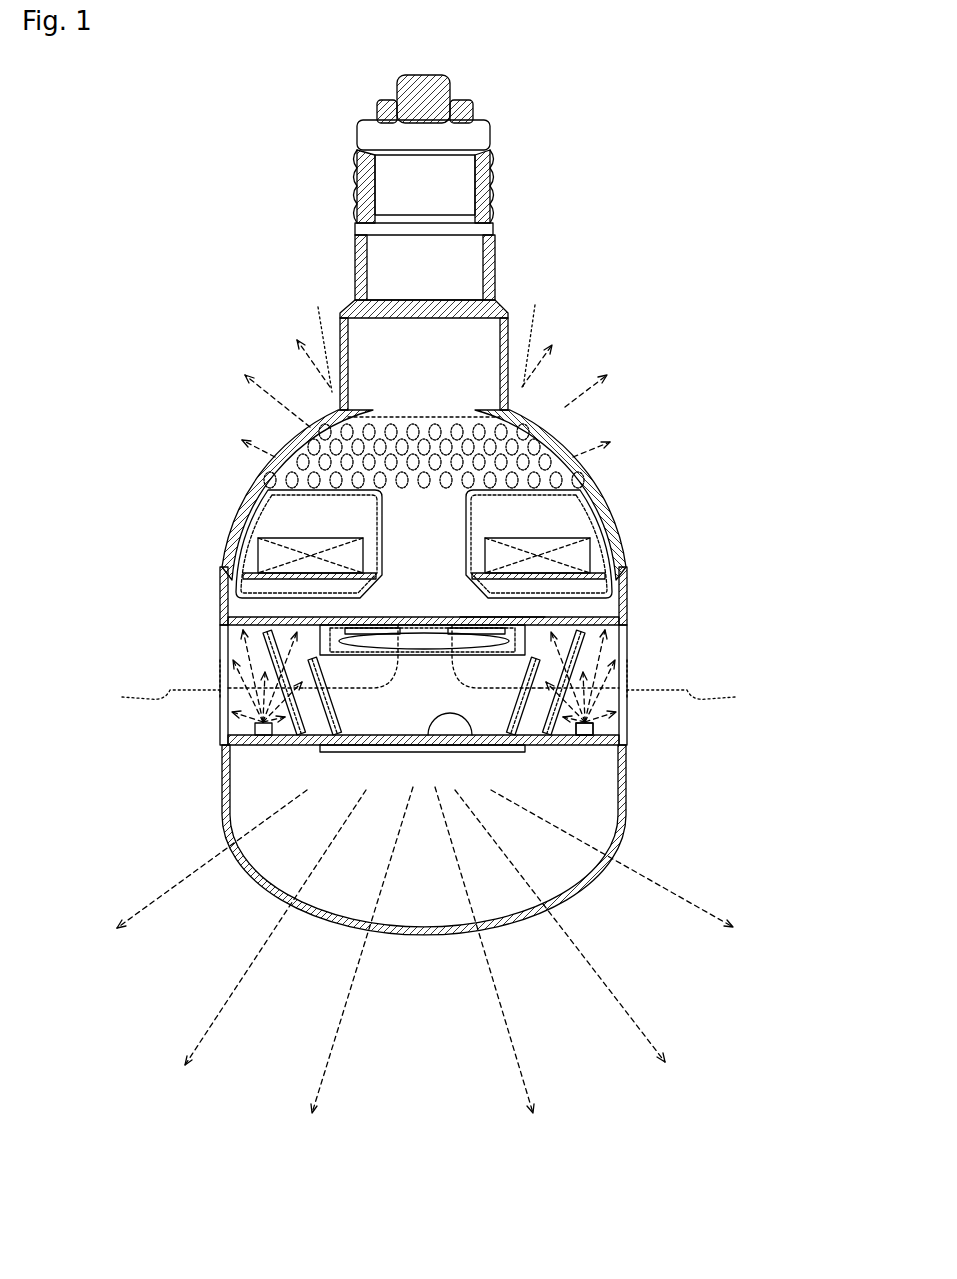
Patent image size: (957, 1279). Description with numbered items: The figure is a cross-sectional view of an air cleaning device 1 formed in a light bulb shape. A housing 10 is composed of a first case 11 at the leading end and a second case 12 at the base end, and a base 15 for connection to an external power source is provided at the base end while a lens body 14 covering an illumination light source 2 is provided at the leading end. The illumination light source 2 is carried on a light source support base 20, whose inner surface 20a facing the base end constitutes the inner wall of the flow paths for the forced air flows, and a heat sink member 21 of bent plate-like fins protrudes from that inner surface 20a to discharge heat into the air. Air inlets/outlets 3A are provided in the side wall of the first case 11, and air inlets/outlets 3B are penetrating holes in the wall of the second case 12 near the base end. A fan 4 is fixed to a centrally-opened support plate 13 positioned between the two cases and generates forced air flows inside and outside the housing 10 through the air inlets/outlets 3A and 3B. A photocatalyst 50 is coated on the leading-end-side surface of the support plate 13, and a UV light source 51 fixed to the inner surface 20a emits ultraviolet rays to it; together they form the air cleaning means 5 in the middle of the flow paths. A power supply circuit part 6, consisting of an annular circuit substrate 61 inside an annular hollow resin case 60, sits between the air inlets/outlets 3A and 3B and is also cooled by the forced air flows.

The air cleaning device 1 is at (606, 268).
The illumination light source 2 is at (505, 753).
The air inlets/outlets 3A is at (222, 688).
The air inlets/outlets 3B is at (448, 443).
The fan 4 is at (418, 638).
The air cleaning means 5 is at (660, 772).
The power supply circuit part 6 is at (172, 475).
The housing 10 is at (630, 566).
The first case 11 is at (628, 652).
The second case 12 is at (600, 503).
The support plate 13 is at (535, 617).
The lens body 14 is at (262, 872).
The base 15 is at (357, 137).
The light source support base 20 is at (224, 790).
The inner surface 20a is at (468, 745).
The heat sink member 21 is at (238, 618).
The photocatalyst 50 is at (262, 640).
The UV light source 51 is at (262, 736).
The resin case 60 is at (262, 491).
The circuit substrate 61 is at (257, 568).